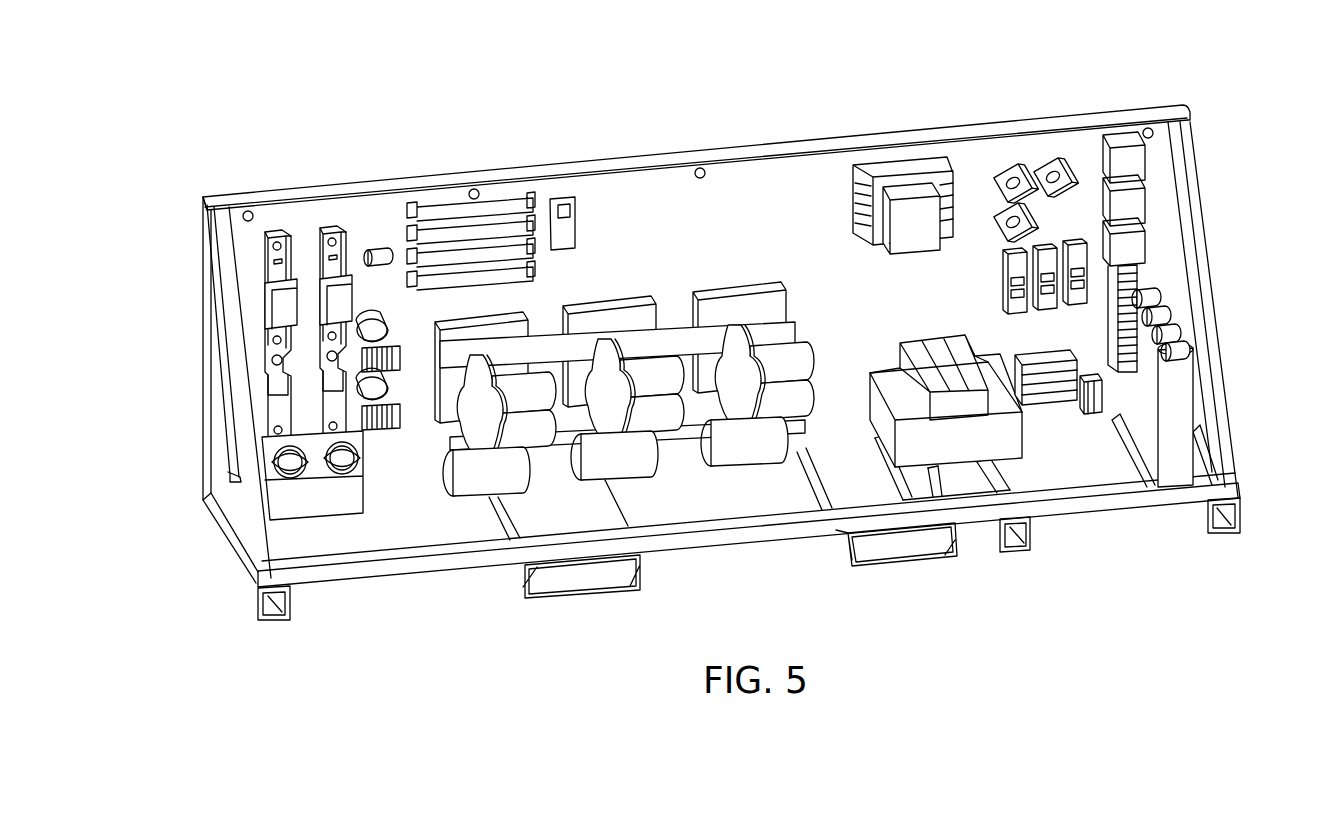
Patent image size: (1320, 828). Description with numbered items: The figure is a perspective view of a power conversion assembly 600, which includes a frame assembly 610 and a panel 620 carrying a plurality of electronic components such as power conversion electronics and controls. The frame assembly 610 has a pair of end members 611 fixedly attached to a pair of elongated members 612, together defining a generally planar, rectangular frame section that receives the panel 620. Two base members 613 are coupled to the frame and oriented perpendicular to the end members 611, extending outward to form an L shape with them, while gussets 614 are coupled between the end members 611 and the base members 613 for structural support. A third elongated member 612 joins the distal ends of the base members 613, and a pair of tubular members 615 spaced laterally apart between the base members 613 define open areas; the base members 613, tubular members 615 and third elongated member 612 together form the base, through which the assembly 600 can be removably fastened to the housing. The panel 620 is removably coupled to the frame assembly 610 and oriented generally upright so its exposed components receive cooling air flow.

The power conversion assembly 600 is at (1175, 73).
The frame assembly 610 is at (165, 216).
The end members 611 is at (215, 348).
The elongated members 612 is at (420, 184).
The base members 613 is at (275, 606).
The gussets 614 is at (232, 288).
The tubular members 615 is at (580, 578).
The panel 620 is at (635, 233).